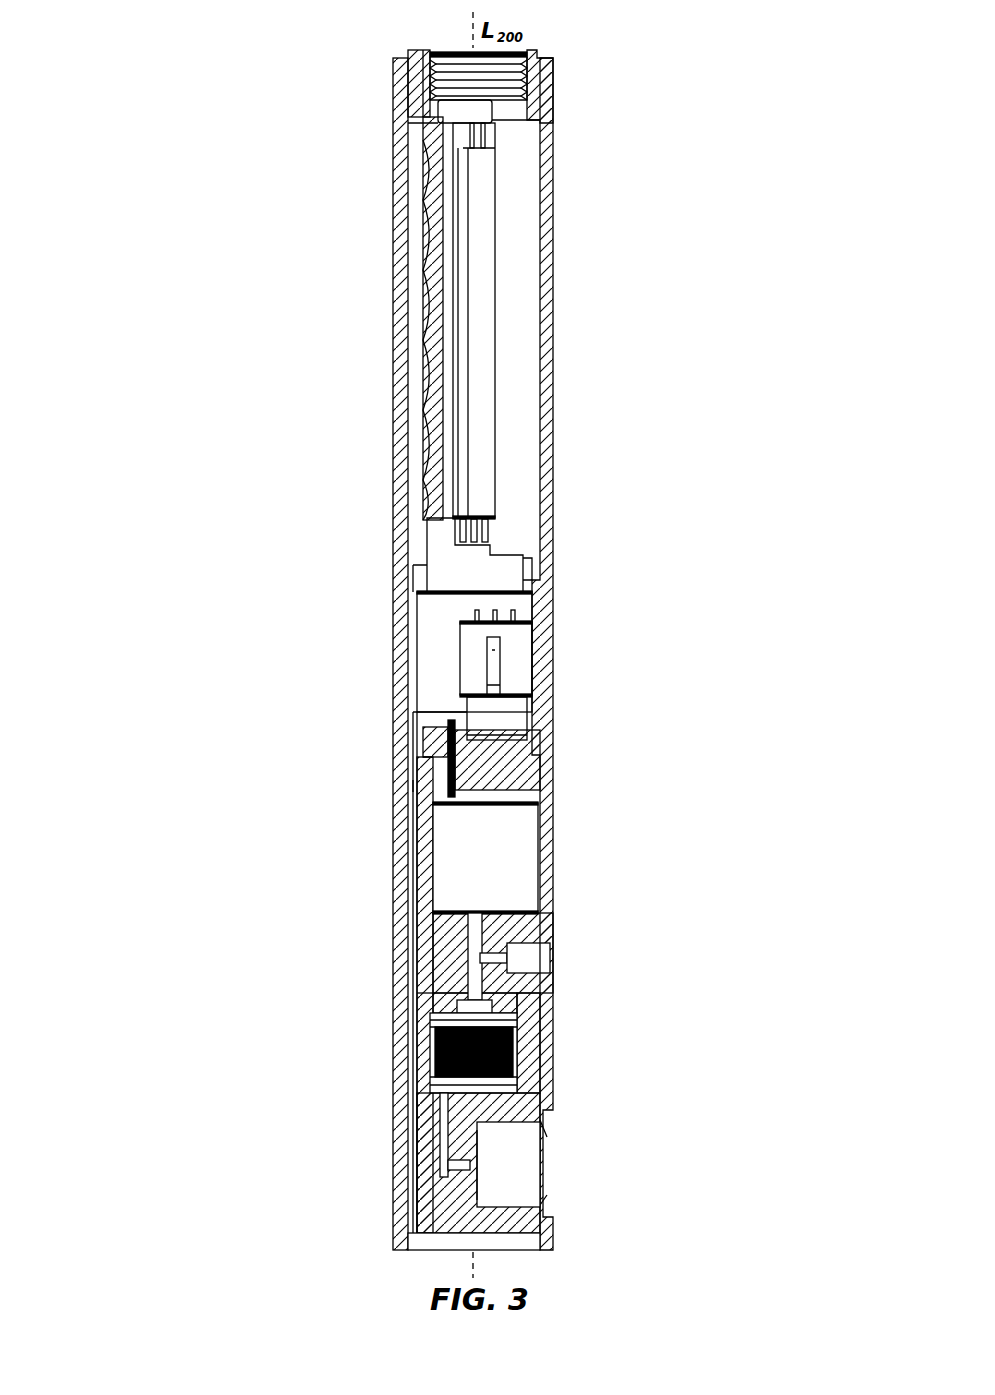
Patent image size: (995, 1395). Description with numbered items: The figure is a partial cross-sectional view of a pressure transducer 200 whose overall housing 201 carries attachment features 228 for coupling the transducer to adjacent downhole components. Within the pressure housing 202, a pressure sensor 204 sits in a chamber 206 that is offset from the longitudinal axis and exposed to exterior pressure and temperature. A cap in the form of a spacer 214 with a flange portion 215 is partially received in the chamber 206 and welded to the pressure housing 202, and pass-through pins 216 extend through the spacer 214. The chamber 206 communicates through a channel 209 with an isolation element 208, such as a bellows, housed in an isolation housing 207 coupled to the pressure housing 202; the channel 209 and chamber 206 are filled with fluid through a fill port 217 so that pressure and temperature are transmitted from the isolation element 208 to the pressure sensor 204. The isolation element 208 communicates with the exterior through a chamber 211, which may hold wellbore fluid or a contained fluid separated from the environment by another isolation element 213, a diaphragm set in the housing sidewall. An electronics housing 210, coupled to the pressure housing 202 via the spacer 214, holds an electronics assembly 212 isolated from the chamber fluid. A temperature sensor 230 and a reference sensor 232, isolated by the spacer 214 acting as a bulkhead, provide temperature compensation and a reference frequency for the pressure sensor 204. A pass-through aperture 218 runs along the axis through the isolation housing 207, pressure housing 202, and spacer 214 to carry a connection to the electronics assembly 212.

The pressure transducer 200 is at (240, 98).
The housing 201 is at (380, 480).
The pressure housing 202 is at (432, 932).
The pressure sensor 204 is at (450, 880).
The chamber 206 is at (430, 798).
The isolation housing 207 is at (440, 1098).
The isolation element 208 is at (520, 1043).
The channel 209 is at (473, 970).
The electronics housing 210 is at (553, 262).
The chamber 211 is at (522, 1175).
The electronics assembly 212 is at (483, 300).
The isolation element 213 is at (540, 1140).
The spacer 214 is at (530, 780).
The flange portion 215 is at (553, 753).
The pass-through pins 216 is at (430, 758).
The fill port 217 is at (545, 963).
The pass-through aperture 218 is at (413, 786).
The attachment feature 228 is at (553, 72).
The temperature sensor 230 is at (513, 665).
The reference sensor 232 is at (496, 653).